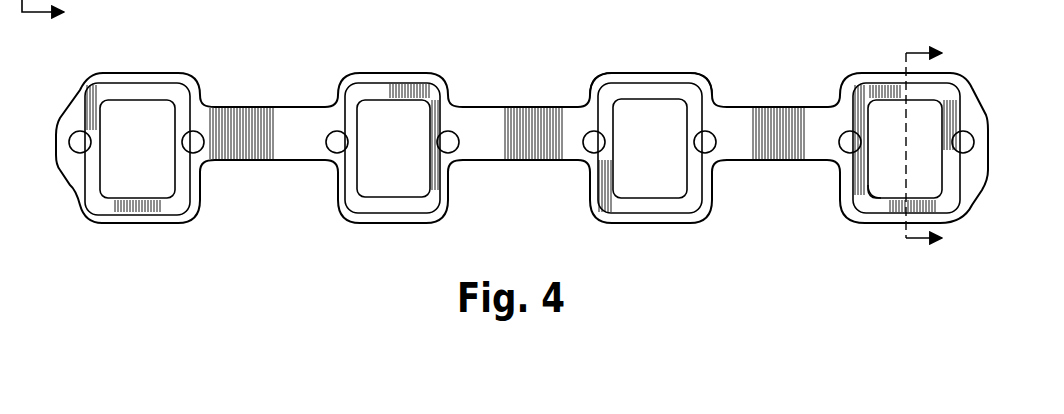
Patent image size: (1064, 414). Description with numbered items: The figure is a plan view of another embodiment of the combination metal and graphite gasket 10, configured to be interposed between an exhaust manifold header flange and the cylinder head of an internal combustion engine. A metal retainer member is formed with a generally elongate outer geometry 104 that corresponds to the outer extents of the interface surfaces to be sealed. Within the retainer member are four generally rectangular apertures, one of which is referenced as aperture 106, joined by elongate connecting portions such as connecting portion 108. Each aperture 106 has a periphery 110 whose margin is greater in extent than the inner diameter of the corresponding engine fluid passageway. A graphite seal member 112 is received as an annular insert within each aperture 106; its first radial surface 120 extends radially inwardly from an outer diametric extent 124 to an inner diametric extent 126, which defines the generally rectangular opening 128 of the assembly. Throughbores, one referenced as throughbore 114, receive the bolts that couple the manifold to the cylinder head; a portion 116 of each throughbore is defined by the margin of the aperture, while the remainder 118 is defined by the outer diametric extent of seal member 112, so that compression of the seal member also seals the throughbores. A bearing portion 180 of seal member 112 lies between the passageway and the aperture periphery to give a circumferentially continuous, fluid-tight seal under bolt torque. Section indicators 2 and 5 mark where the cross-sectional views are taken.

The gasket 10 is at (977, 133).
The outer geometry 104 is at (625, 72).
The aperture 106 is at (936, 92).
The connecting portion 108 is at (504, 128).
The periphery 110 is at (658, 90).
The seal member 112 is at (948, 196).
The throughbore 114 is at (976, 120).
The portion of throughbore 116 is at (840, 150).
The remainder of throughbore 118 is at (948, 156).
The first radial surface 120 is at (862, 100).
The outer diametric extent 124 is at (592, 164).
The inner diametric extent 126 is at (888, 190).
The opening 128 is at (668, 184).
The bearing portion 180 is at (862, 114).
The section line 2 is at (43, 23).
The section line 5 is at (924, 149).